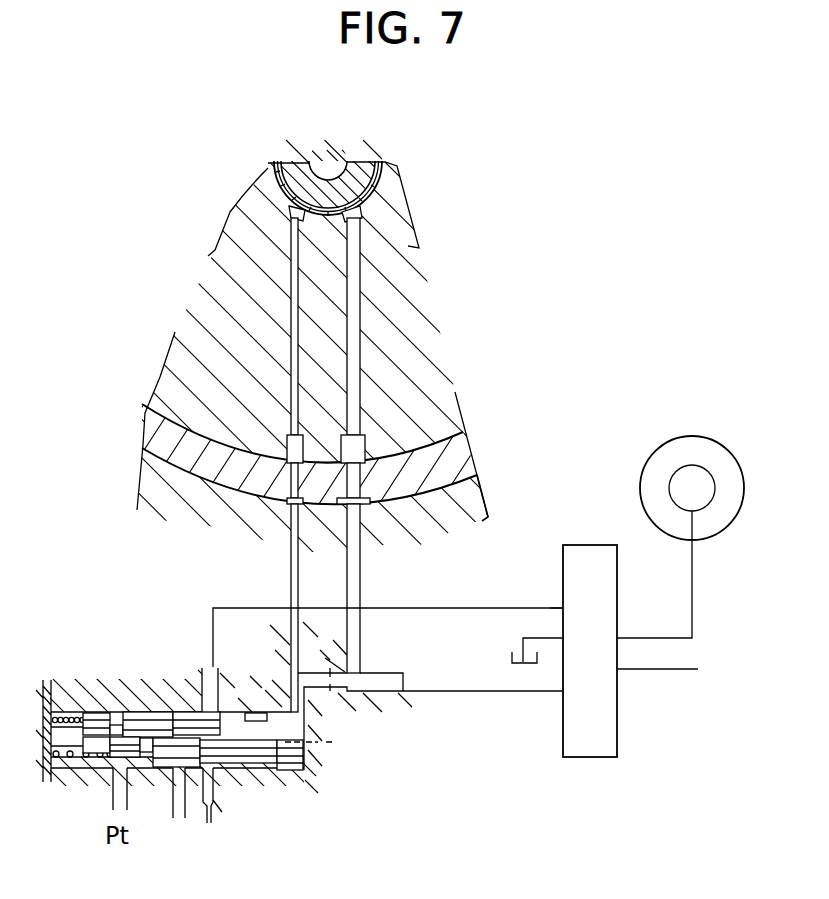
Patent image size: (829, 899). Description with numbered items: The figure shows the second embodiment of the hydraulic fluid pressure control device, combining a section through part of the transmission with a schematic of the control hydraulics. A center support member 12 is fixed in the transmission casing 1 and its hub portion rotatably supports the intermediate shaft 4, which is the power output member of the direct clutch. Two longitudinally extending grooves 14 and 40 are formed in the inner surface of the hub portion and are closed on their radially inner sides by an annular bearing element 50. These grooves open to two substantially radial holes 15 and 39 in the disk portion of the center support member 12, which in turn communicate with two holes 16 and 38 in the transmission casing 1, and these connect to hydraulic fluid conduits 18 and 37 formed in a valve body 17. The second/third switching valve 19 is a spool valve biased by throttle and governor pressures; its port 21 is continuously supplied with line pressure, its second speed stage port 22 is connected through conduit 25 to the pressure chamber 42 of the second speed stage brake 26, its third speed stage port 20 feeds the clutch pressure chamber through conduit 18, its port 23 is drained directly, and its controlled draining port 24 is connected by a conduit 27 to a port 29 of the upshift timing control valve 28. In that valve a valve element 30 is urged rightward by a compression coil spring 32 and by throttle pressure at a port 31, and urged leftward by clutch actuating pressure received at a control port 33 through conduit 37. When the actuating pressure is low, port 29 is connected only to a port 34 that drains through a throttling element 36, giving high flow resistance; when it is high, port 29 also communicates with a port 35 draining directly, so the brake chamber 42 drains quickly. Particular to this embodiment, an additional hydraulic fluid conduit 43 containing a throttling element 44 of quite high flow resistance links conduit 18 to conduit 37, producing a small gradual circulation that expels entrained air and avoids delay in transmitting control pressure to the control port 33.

The transmission casing 1 is at (466, 448).
The intermediate shaft 4 is at (362, 173).
The center support member 12 is at (408, 245).
The longitudinally extending groove 14 is at (352, 217).
The hole 15 is at (360, 355).
The hole 16 is at (362, 480).
The valve body 17 is at (483, 496).
The hydraulic fluid conduit 18 is at (362, 548).
The second/third switching valve 19 is at (588, 544).
The third speed stage port 20 is at (563, 692).
The line pressure port 21 is at (617, 670).
The second speed stage port 22 is at (617, 638).
The drain port 23 is at (563, 636).
The second speed stage controlled draining port 24 is at (563, 606).
The hydraulic fluid conduit 25 is at (692, 600).
The second speed stage brake 26 is at (641, 446).
The conduit 27 is at (446, 612).
The upshift timing control valve 28 is at (310, 785).
The port 29 is at (202, 669).
The valve element 30 is at (230, 748).
The port 31 is at (113, 800).
The compression coil spring 32 is at (70, 718).
The control port 33 is at (300, 742).
The port 34 is at (214, 803).
The port 35 is at (175, 805).
The throttling element 36 is at (208, 815).
The hydraulic fluid conduit 37 is at (290, 549).
The hole 38 is at (290, 480).
The hole 39 is at (291, 350).
The longitudinally extending groove 40 is at (293, 217).
The pressure chamber 42 is at (705, 502).
The additional hydraulic fluid conduit 43 is at (303, 695).
The throttling element 44 is at (330, 668).
The annular bearing element 50 is at (284, 168).